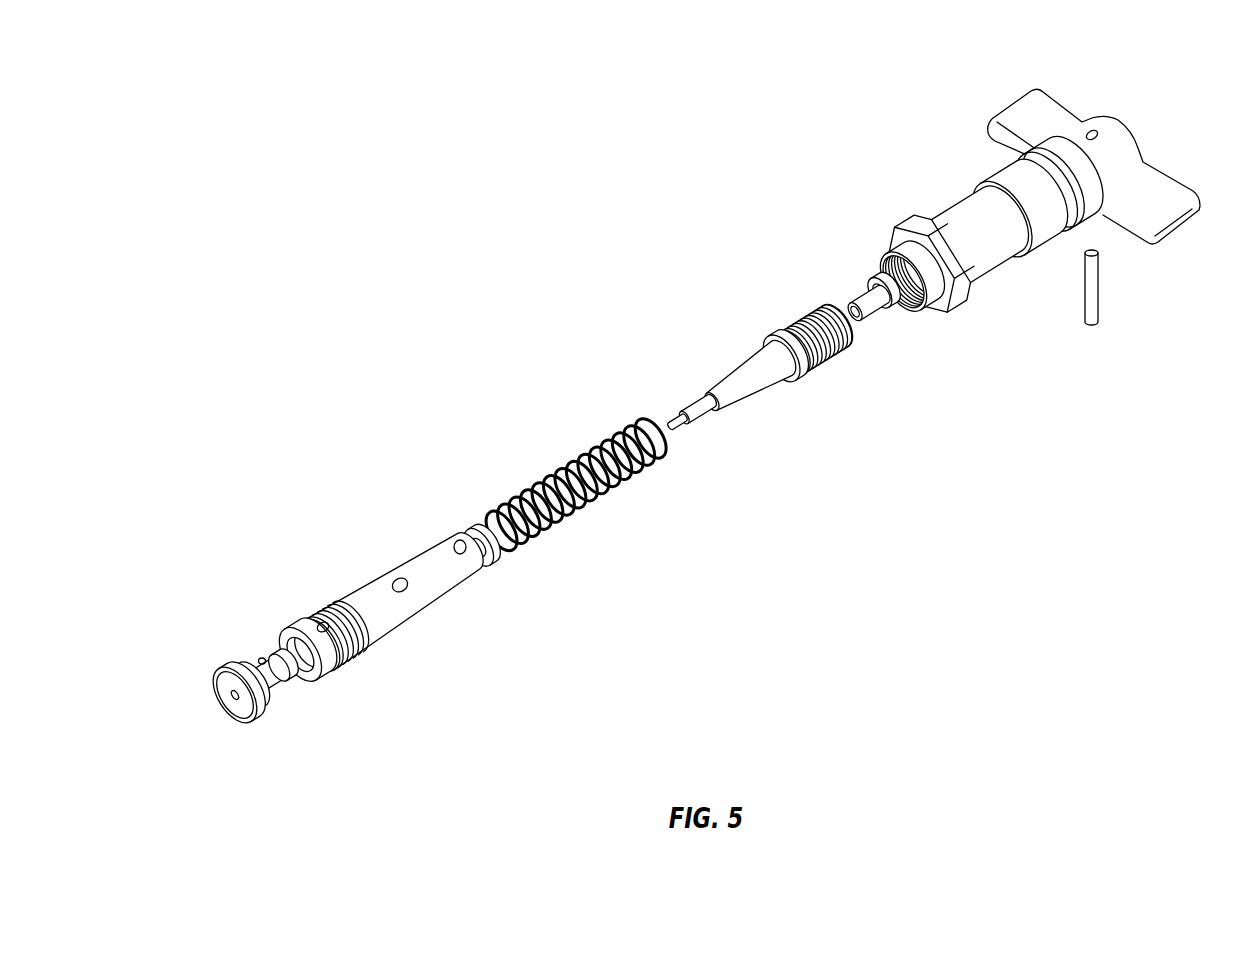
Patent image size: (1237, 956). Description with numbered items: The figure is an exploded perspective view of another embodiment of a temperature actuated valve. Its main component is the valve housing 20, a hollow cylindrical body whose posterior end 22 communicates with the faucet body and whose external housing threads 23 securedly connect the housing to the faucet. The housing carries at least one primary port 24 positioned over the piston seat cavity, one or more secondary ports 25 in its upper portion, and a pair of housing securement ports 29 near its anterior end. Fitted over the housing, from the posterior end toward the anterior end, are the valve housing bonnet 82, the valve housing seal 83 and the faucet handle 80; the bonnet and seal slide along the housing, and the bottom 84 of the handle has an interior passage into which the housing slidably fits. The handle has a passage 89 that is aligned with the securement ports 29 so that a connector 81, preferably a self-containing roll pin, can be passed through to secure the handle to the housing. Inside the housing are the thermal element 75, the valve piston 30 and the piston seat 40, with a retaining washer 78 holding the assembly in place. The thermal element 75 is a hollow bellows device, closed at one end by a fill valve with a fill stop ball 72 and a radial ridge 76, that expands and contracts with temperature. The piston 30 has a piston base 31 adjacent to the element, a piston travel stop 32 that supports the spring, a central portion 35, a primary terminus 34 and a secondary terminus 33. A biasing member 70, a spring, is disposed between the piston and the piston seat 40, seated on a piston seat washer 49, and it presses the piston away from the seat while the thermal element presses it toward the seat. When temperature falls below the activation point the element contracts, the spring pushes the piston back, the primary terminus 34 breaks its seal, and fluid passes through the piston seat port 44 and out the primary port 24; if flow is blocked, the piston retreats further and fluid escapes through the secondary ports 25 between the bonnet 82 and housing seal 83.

The valve housing 20 is at (409, 611).
The posterior end 22 is at (286, 623).
The external housing threads 23 is at (355, 660).
The primary port 24 is at (318, 618).
The secondary ports 25 is at (396, 578).
The housing securement ports 29 is at (457, 535).
The valve piston 30 is at (758, 364).
The piston base 31 is at (783, 333).
The piston travel stop 32 is at (753, 397).
The secondary terminus 33 is at (694, 415).
The primary terminus 34 is at (681, 430).
The central portion 35 is at (701, 417).
The piston seat 40 is at (264, 698).
The piston seat port 44 is at (260, 664).
The piston seat washer 49 is at (488, 570).
The biasing member 70 is at (525, 478).
The fill stop ball 72 is at (847, 324).
The thermal element 75 is at (808, 302).
The radial ridge 76 is at (866, 330).
The retaining washer 78 is at (872, 268).
The faucet handle 80 is at (1105, 166).
The connector 81 is at (1100, 287).
The valve housing bonnet 82 is at (933, 205).
The valve housing seal 83 is at (993, 178).
The bottom of the handle 84 is at (1047, 157).
The handle passage 89 is at (1098, 128).